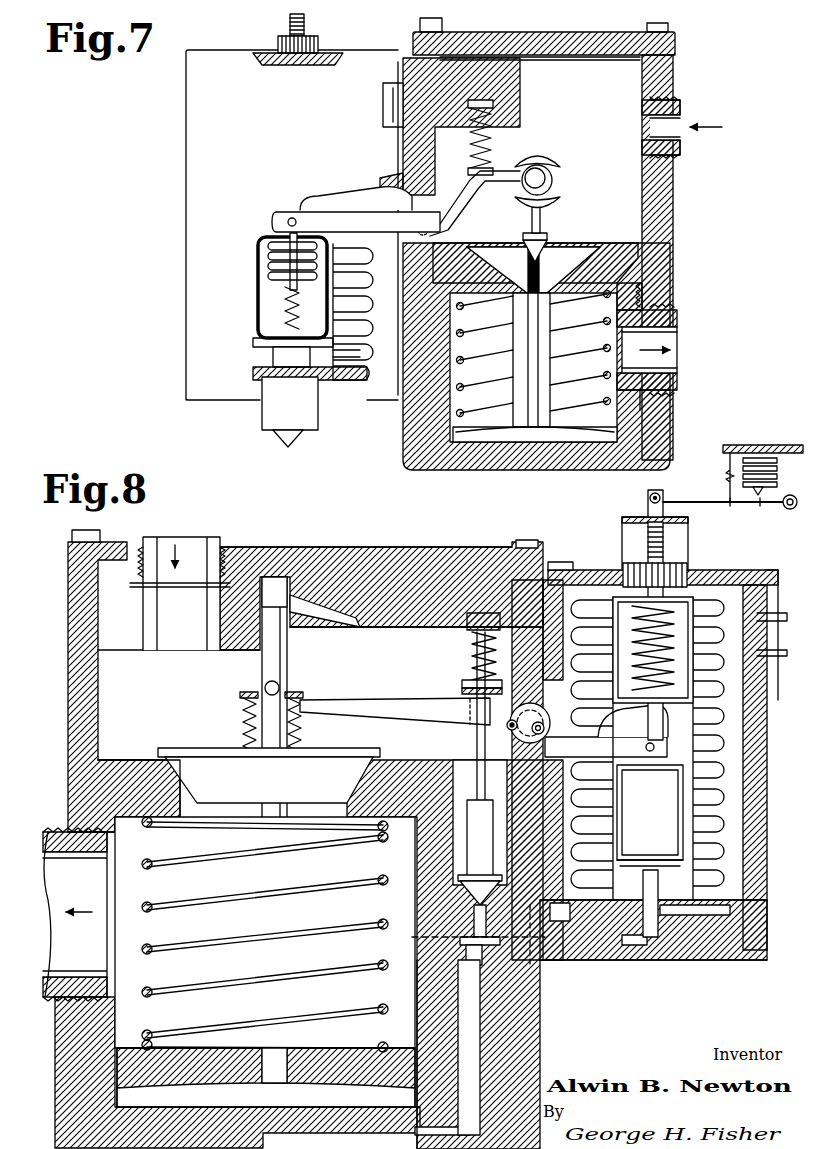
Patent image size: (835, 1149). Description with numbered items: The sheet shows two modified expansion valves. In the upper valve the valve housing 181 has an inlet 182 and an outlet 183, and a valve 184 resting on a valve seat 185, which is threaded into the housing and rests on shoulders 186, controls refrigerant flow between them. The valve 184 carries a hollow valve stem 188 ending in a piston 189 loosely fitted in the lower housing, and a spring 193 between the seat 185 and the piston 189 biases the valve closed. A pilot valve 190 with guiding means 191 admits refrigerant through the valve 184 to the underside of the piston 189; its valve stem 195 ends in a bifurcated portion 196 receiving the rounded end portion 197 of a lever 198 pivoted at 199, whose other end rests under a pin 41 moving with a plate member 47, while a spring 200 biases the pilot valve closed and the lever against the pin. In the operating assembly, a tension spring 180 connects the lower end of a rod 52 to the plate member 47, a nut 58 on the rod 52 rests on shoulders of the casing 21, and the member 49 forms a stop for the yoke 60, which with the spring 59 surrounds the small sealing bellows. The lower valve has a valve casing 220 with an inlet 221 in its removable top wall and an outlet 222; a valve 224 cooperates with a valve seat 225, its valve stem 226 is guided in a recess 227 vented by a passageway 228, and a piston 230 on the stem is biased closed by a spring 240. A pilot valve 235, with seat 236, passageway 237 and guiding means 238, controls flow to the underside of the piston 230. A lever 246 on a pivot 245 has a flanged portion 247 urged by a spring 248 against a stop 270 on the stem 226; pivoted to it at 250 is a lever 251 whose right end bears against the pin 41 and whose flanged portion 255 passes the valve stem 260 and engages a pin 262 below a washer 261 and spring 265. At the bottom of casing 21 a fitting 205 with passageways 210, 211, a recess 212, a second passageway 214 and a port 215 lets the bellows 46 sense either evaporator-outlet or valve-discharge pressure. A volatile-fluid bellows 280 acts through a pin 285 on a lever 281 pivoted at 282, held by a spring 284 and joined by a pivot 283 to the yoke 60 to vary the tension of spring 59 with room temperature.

In FIG. 7, the casing 21 is at (277, 151).
In FIG. 8, the casing 21 is at (769, 871).
In FIG. 7, the pin 41 is at (288, 222).
In FIG. 8, the pin 41 is at (656, 746).
In FIG. 8, the bellows 46 is at (726, 868).
In FIG. 7, the plate member 47 is at (258, 334).
In FIG. 8, the plate member 47 is at (735, 750).
In FIG. 8, the member 49 is at (596, 592).
In FIG. 7, the rod 52 is at (266, 292).
In FIG. 7, the nut 58 is at (320, 42).
In FIG. 8, the spring 59 is at (682, 600).
In FIG. 8, the yoke 60 is at (712, 615).
In FIG. 7, the tension spring 180 is at (285, 320).
In FIG. 7, the valve housing 181 is at (277, 47).
In FIG. 7, the inlet 182 is at (674, 118).
In FIG. 7, the outlet 183 is at (678, 350).
In FIG. 7, the valve 184 is at (545, 253).
In FIG. 7, the valve seat 185 is at (608, 267).
In FIG. 7, the shoulders 186 is at (636, 294).
In FIG. 7, the hollow valve stem 188 is at (549, 349).
In FIG. 7, the piston 189 is at (578, 420).
In FIG. 7, the pilot valve 190 is at (547, 234).
In FIG. 7, the guiding means 191 is at (548, 248).
In FIG. 7, the spring 193 is at (618, 394).
In FIG. 7, the valve stem 195 is at (556, 200).
In FIG. 7, the bifurcated portion 196 is at (553, 162).
In FIG. 7, the rounded end portion 197 is at (552, 178).
In FIG. 7, the lever 198 is at (458, 212).
In FIG. 7, the pivot 199 is at (432, 232).
In FIG. 7, the spring 200 is at (494, 140).
In FIG. 8, the fitting 205 is at (583, 947).
In FIG. 8, the passageway 210 is at (695, 950).
In FIG. 8, the passageway 211 is at (662, 950).
In FIG. 8, the recess 212 is at (632, 956).
In FIG. 8, the second passageway 214 is at (540, 1000).
In FIG. 8, the port 215 is at (560, 946).
In FIG. 8, the valve casing 220 is at (306, 520).
In FIG. 8, the inlet 221 is at (192, 546).
In FIG. 8, the outlet 222 is at (51, 921).
In FIG. 8, the valve 224 is at (219, 749).
In FIG. 8, the valve seat 225 is at (146, 759).
In FIG. 8, the valve stem 226 is at (281, 668).
In FIG. 8, the recess 227 is at (284, 586).
In FIG. 8, the passageway 228 is at (326, 630).
In FIG. 8, the piston 230 is at (241, 1083).
In FIG. 8, the pilot valve 235 is at (458, 878).
In FIG. 8, the seat 236 is at (470, 910).
In FIG. 8, the passageway 237 is at (466, 1030).
In FIG. 8, the guiding means 238 is at (402, 937).
In FIG. 8, the spring 240 is at (233, 882).
In FIG. 8, the pivot 245 is at (514, 720).
In FIG. 8, the lever 246 is at (406, 701).
In FIG. 8, the flanged portion 247 is at (244, 698).
In FIG. 8, the spring 248 is at (300, 729).
In FIG. 8, the pivot 250 is at (538, 735).
In FIG. 8, the lever 251 is at (585, 757).
In FIG. 8, the flanged portion 255 is at (462, 690).
In FIG. 8, the valve stem 260 is at (478, 768).
In FIG. 8, the flange or washer 261 is at (470, 661).
In FIG. 8, the pin 262 is at (463, 682).
In FIG. 8, the spring 265 is at (468, 641).
In FIG. 8, the stop 270 is at (268, 684).
In FIG. 8, the bellows 280 is at (763, 446).
In FIG. 8, the lever 281 is at (755, 505).
In FIG. 8, the pivot 282 is at (790, 510).
In FIG. 8, the pivot 283 is at (660, 495).
In FIG. 8, the spring 284 is at (727, 469).
In FIG. 8, the pin 285 is at (764, 485).